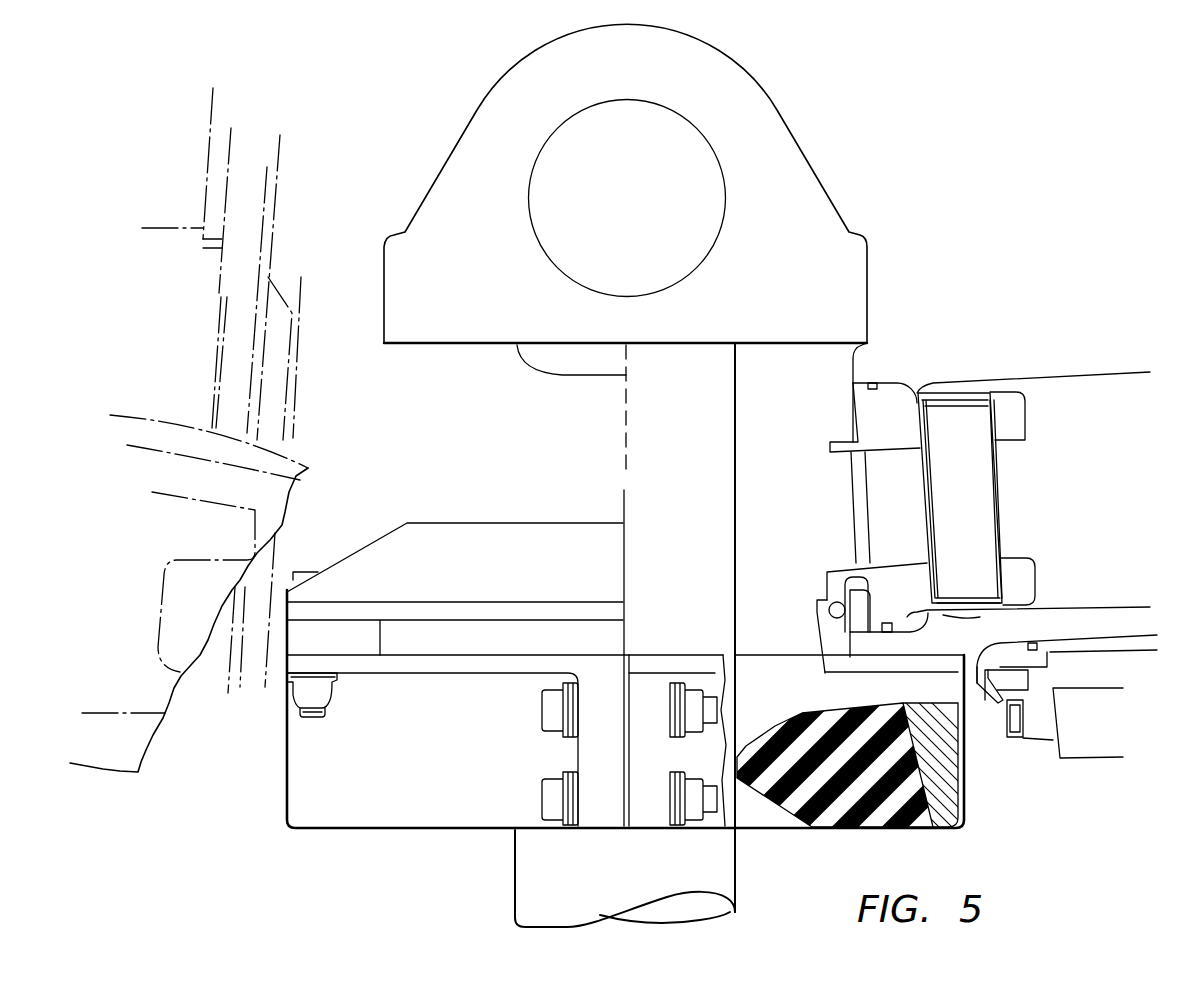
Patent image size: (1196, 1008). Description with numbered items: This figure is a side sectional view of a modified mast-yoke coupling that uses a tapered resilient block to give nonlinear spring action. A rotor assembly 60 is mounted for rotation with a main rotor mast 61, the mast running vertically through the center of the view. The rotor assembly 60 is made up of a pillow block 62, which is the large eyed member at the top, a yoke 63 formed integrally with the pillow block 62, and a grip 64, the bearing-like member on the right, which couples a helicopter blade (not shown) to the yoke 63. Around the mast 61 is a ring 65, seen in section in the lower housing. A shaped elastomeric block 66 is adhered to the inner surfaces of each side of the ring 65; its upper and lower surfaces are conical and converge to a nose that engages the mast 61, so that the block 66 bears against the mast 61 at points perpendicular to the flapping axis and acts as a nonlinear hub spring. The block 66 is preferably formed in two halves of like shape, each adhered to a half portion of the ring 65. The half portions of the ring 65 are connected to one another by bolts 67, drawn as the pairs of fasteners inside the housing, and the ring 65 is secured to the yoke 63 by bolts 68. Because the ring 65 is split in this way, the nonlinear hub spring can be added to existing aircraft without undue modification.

The rotor assembly 60 is at (856, 112).
The main rotor mast 61 is at (670, 870).
The pillow block 62 is at (793, 223).
The yoke 63 is at (886, 424).
The grip 64 is at (1090, 434).
The ring 65 is at (960, 795).
The shaped elastomeric block 66 is at (850, 807).
The bolts 67 is at (550, 790).
The bolts 68 is at (323, 697).